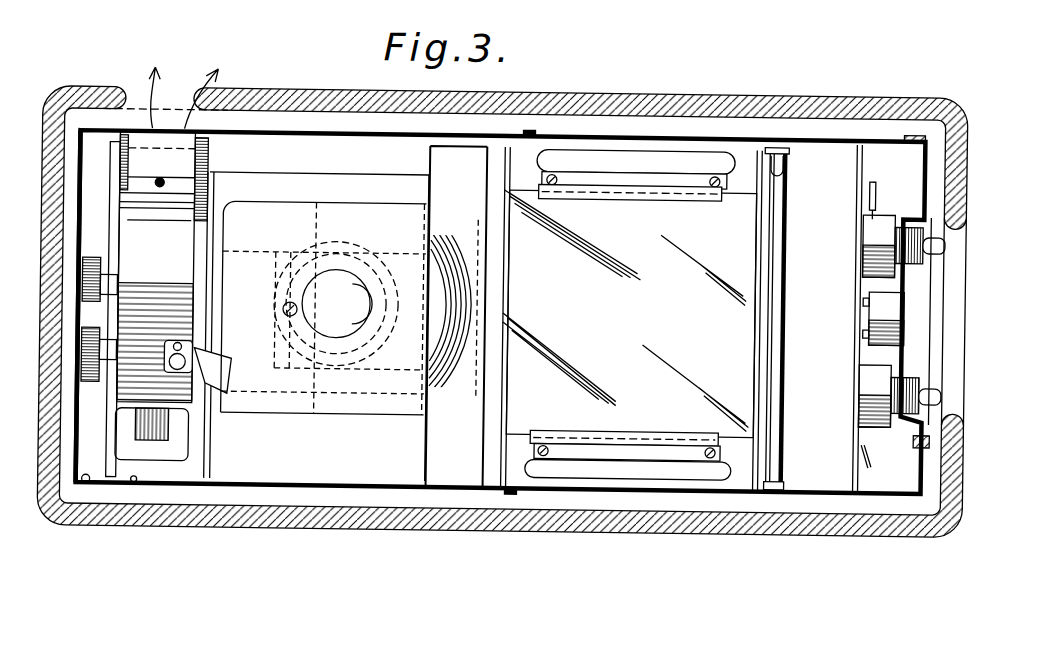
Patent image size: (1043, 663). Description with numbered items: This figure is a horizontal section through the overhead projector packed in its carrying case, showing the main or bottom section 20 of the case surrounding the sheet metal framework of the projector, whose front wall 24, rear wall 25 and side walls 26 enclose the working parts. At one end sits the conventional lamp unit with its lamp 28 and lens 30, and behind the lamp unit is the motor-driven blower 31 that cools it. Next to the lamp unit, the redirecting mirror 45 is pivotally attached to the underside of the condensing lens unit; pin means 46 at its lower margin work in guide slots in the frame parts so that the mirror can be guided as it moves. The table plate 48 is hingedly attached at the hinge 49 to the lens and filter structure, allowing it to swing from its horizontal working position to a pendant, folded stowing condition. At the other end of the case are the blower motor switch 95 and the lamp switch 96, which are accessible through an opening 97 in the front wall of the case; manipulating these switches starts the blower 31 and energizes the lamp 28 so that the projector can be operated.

The main or bottom section 20 is at (800, 538).
The front wall 24 is at (918, 470).
The rear wall 25 is at (78, 176).
The side walls 26 is at (672, 134).
The lamp 28 is at (361, 312).
The lens 30 is at (437, 260).
The motor-driven blower 31 is at (166, 238).
The redirecting mirror 45 is at (634, 310).
The pin means 46 is at (527, 130).
The table plate 48 is at (777, 424).
The hinge attachment 49 is at (781, 164).
The blower motor switch 95 is at (942, 392).
The lamp switch 96 is at (945, 245).
The opening 97 is at (963, 316).